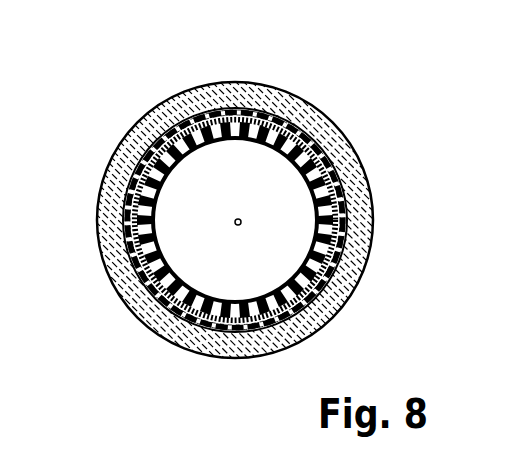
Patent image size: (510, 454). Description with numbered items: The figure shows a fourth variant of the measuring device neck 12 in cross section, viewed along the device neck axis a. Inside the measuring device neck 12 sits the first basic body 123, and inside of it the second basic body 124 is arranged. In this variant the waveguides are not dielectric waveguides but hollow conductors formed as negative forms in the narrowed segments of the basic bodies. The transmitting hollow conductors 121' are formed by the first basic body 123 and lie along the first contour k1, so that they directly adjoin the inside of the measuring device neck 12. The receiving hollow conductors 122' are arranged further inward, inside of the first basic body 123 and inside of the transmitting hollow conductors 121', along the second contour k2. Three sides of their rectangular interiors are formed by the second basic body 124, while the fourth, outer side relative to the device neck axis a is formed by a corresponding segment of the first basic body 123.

The measuring device neck 12 is at (182, 344).
The transmitting hollow conductor 121' is at (189, 226).
The receiving hollow conductor 122' is at (201, 245).
The first basic body 123 is at (182, 130).
The second basic body 124 is at (265, 296).
The device neck axis a is at (242, 216).
The first contour k1 is at (341, 192).
The second contour k2 is at (343, 222).